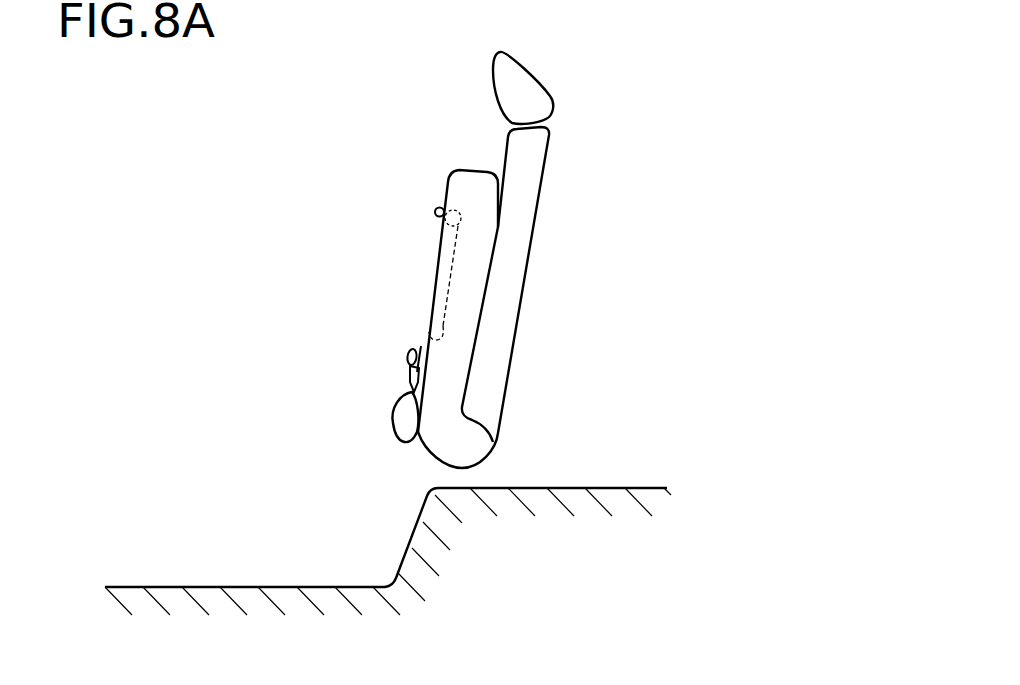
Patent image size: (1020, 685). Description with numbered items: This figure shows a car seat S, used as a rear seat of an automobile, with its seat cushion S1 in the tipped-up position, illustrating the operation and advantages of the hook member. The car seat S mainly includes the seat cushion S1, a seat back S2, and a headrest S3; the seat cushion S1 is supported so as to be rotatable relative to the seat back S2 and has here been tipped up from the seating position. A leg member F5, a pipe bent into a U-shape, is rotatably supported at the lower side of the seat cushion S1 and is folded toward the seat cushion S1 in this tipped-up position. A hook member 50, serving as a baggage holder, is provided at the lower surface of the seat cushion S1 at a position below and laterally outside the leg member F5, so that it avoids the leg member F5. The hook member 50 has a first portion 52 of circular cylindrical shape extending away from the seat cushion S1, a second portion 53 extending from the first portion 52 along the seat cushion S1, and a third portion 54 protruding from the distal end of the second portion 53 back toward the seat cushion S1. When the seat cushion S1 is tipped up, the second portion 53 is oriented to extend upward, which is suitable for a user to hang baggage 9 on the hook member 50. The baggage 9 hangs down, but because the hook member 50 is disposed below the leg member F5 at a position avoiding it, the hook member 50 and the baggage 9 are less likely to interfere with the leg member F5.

The car seat S is at (563, 72).
The seat cushion S1 is at (457, 165).
The seat back S2 is at (527, 240).
The headrest S3 is at (496, 80).
The leg member F5 is at (441, 247).
The hook member 50 is at (396, 360).
The first portion 52 is at (408, 372).
The second portion 53 is at (409, 355).
The third portion 54 is at (423, 350).
The baggage 9 is at (390, 418).